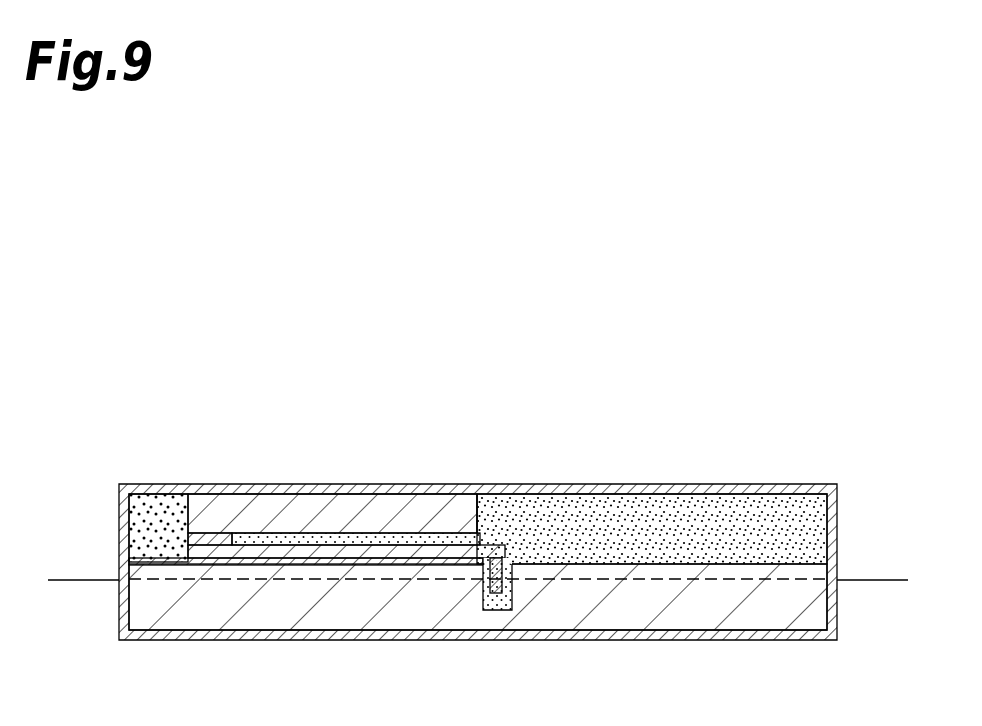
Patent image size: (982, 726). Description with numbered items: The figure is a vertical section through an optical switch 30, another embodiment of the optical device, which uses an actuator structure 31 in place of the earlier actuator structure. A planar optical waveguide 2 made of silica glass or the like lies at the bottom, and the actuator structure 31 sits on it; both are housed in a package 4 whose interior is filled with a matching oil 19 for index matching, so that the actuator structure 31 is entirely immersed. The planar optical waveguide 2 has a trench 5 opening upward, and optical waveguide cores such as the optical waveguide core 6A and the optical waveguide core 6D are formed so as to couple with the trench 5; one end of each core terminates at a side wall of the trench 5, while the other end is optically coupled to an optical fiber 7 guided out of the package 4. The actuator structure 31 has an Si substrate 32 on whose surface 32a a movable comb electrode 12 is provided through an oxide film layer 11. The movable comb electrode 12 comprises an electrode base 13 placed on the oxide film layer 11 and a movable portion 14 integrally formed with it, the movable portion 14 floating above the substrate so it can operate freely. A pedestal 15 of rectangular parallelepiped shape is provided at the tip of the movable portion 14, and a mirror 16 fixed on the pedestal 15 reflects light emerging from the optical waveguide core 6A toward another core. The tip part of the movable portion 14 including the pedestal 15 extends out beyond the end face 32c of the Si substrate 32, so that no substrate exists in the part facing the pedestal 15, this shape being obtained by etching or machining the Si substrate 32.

The planar optical waveguide 2 is at (385, 605).
The package 4 is at (720, 483).
The trench 5 is at (503, 604).
The optical waveguide core 6A is at (268, 579).
The optical waveguide core 6D is at (725, 579).
The optical fiber 7 is at (75, 583).
The oxide film layer 11 is at (217, 533).
The movable comb electrode 12 is at (420, 538).
The electrode base 13 is at (208, 560).
The movable portion 14 is at (327, 551).
The pedestal 15 is at (512, 552).
The mirror 16 is at (483, 588).
The matching oil 19 is at (803, 525).
The optical switch 30 is at (640, 330).
The actuator structure 31 is at (480, 513).
The Si substrate 32 is at (356, 512).
The surface 32a is at (268, 540).
The end face 32c is at (483, 493).